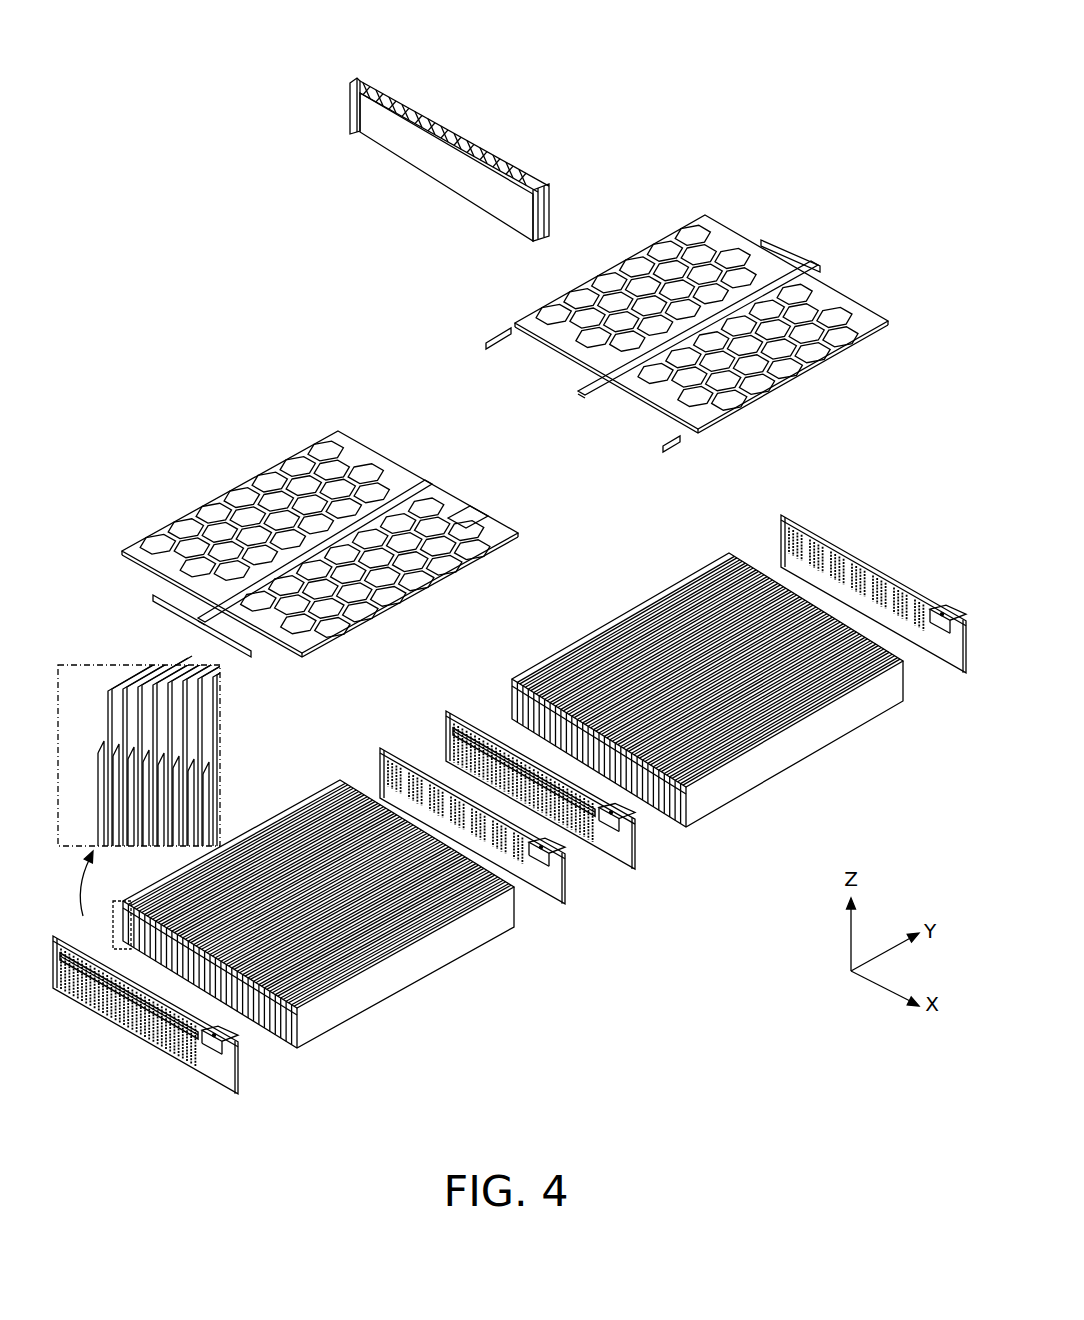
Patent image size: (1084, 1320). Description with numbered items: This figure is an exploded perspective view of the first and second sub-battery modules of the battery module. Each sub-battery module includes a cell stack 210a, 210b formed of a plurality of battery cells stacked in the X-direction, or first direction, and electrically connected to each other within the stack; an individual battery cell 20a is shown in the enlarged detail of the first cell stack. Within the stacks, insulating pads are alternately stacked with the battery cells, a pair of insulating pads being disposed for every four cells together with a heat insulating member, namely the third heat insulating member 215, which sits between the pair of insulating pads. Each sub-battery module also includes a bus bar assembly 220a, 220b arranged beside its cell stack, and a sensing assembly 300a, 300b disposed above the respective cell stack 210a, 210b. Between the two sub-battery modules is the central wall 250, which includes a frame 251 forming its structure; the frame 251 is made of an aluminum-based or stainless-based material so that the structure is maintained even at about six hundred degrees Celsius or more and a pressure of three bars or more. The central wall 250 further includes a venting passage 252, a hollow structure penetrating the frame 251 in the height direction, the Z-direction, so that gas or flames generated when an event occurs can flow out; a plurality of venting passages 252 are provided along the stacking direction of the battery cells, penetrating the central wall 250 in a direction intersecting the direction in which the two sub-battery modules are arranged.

The central wall 250 is at (489, 137).
The frame 251 is at (442, 167).
The venting passage 252 is at (454, 112).
The sensing assembly 300a is at (320, 579).
The sensing assembly 300b is at (708, 333).
The cell stack 210a is at (318, 914).
The cell stack 210b is at (707, 690).
The bus bar assembly 220a is at (145, 1030).
The bus bar assembly 220b is at (873, 586).
The battery cell 20a is at (156, 723).
The third heat insulating member 215 is at (159, 723).